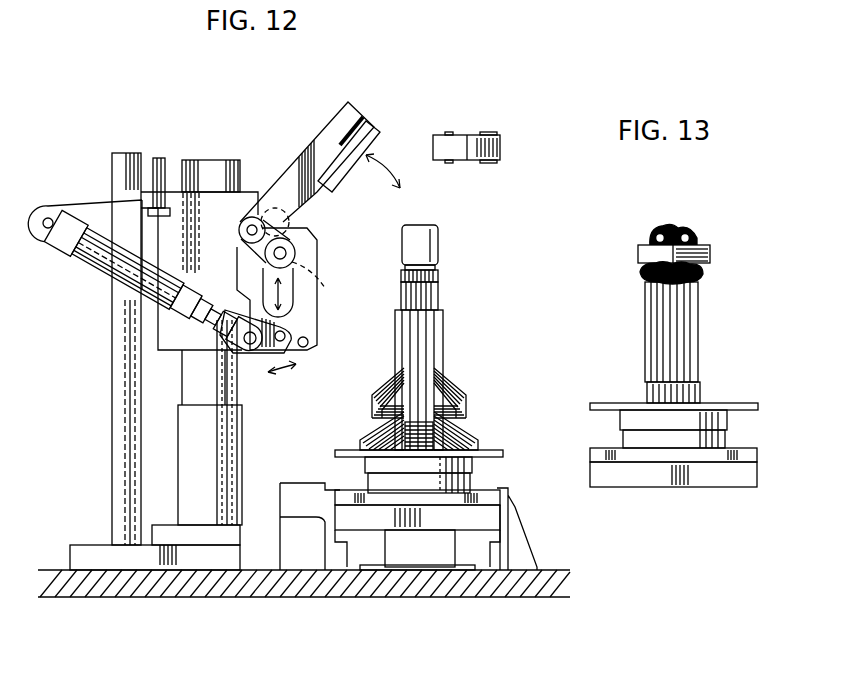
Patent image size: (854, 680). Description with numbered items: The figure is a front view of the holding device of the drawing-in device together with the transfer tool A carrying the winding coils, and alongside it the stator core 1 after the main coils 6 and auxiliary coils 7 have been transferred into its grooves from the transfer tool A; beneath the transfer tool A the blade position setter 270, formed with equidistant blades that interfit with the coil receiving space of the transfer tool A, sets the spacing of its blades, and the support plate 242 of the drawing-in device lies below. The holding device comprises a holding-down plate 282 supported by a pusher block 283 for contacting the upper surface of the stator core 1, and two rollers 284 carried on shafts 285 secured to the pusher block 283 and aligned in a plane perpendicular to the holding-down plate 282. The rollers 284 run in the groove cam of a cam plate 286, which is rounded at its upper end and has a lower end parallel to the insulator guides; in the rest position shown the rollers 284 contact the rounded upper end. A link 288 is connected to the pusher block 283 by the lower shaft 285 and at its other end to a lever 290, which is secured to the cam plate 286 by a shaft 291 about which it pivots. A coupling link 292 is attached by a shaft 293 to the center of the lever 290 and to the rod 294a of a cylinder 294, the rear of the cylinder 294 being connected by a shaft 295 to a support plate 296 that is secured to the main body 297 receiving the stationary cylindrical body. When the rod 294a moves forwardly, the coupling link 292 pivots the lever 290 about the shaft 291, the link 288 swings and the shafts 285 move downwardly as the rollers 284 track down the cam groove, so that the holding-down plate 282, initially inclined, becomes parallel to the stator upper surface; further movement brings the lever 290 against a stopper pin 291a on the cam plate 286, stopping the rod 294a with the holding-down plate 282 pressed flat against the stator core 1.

In FIG. 12, the stator core 1 is at (474, 148).
In FIG. 13, the stator core 1 is at (642, 255).
In FIG. 12, the main coils 6 is at (462, 376).
In FIG. 13, the main coils 6 is at (674, 232).
In FIG. 12, the auxiliary coils 7 is at (472, 421).
In FIG. 13, the auxiliary coils 7 is at (700, 247).
In FIG. 12, the transfer tool A is at (440, 332).
In FIG. 13, the transfer tool A is at (699, 341).
In FIG. 12, the support plate 242 is at (118, 598).
In FIG. 12, the blade position setter 270 is at (432, 254).
In FIG. 12, the holding-down plate 282 is at (366, 125).
In FIG. 12, the pusher block 283 is at (331, 137).
In FIG. 12, the rollers 284 is at (300, 218).
In FIG. 12, the shafts 285 is at (253, 225).
In FIG. 12, the cam plate 286 is at (309, 323).
In FIG. 12, the link 288 is at (227, 273).
In FIG. 12, the lever 290 is at (303, 352).
In FIG. 12, the shaft 291 is at (283, 355).
In FIG. 12, the stopper pin 291a is at (306, 346).
In FIG. 12, the coupling link 292 is at (240, 343).
In FIG. 12, the shaft 293 is at (252, 350).
In FIG. 12, the cylinder 294 is at (137, 300).
In FIG. 12, the rod 294a is at (226, 302).
In FIG. 12, the shaft 295 is at (47, 230).
In FIG. 12, the support plate 296 is at (100, 216).
In FIG. 12, the main body 297 is at (178, 203).